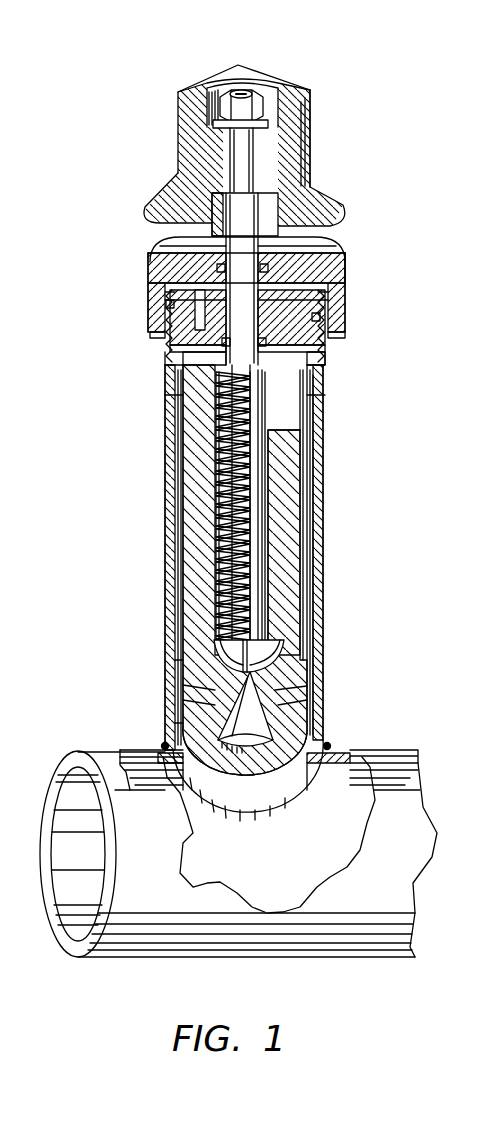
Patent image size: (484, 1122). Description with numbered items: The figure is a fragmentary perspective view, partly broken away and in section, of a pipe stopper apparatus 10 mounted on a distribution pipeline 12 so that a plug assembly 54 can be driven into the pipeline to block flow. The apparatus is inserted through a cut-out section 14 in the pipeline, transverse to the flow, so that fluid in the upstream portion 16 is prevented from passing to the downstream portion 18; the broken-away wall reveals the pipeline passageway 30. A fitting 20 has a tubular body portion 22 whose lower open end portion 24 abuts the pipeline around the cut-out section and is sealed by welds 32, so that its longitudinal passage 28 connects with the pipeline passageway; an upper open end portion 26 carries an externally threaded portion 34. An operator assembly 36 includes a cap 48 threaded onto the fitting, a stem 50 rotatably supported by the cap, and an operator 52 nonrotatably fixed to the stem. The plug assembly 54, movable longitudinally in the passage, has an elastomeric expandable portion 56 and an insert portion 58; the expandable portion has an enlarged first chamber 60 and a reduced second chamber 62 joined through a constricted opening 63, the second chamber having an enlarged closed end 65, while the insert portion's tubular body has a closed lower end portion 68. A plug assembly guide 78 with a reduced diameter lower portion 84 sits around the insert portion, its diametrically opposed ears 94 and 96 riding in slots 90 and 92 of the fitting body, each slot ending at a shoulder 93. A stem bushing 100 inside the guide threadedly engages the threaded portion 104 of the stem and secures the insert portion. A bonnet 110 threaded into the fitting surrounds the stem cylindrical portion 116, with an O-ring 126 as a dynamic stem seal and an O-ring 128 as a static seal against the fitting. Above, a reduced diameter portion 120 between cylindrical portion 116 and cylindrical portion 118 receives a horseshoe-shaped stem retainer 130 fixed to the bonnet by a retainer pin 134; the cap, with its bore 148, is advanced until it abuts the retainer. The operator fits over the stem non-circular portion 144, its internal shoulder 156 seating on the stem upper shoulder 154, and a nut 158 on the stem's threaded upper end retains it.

The pipe stopper apparatus 10 is at (142, 232).
The distribution pipeline 12 is at (142, 958).
The cut-out section 14 is at (298, 790).
The upstream portion 16 is at (106, 750).
The downstream portion 18 is at (384, 762).
The fitting 20 is at (150, 452).
The tubular body portion 22 is at (170, 556).
The lower open end portion 24 is at (329, 742).
The upper open end portion 26 is at (340, 290).
The longitudinal passage 28 is at (300, 686).
The pipeline passageway 30 is at (228, 866).
The welds 32 is at (164, 744).
The externally threaded portion 34 is at (330, 345).
The operator assembly 36 is at (162, 107).
The cap 48 is at (158, 270).
The stem 50 is at (180, 480).
The operator 52 is at (312, 118).
The plug assembly 54 is at (318, 610).
The expandable portion 56 is at (300, 545).
The insert portion 58 is at (172, 606).
The enlarged first chamber 60 is at (173, 628).
The reduced second chamber 62 is at (176, 722).
The constricted opening 63 is at (292, 700).
The enlarged closed end 65 is at (248, 742).
The closed lower end portion 68 is at (295, 660).
The plug assembly guide 78 is at (180, 426).
The reduced diameter lower portion 84 is at (292, 500).
The longitudinally extending slot 90 is at (172, 582).
The longitudinally extending slot 92 is at (320, 575).
The shoulder 93 is at (182, 686).
The ear 94 is at (172, 405).
The ear 96 is at (325, 395).
The stem bushing 100 is at (180, 380).
The threaded portion 104 is at (172, 530).
The bonnet 110 is at (322, 370).
The cylindrical portion 116 is at (170, 364).
The cylindrical portion 118 is at (233, 237).
The reduced diameter portion 120 is at (323, 272).
The O-ring 126 is at (172, 350).
The O-ring 128 is at (165, 304).
The stem retainer 130 is at (150, 254).
The retainer pin 134 is at (150, 331).
The non-circular portion 144 is at (252, 157).
The bore 148 is at (346, 258).
The upper shoulder 154 is at (224, 160).
The internal shoulder 156 is at (266, 186).
The nut 158 is at (246, 93).